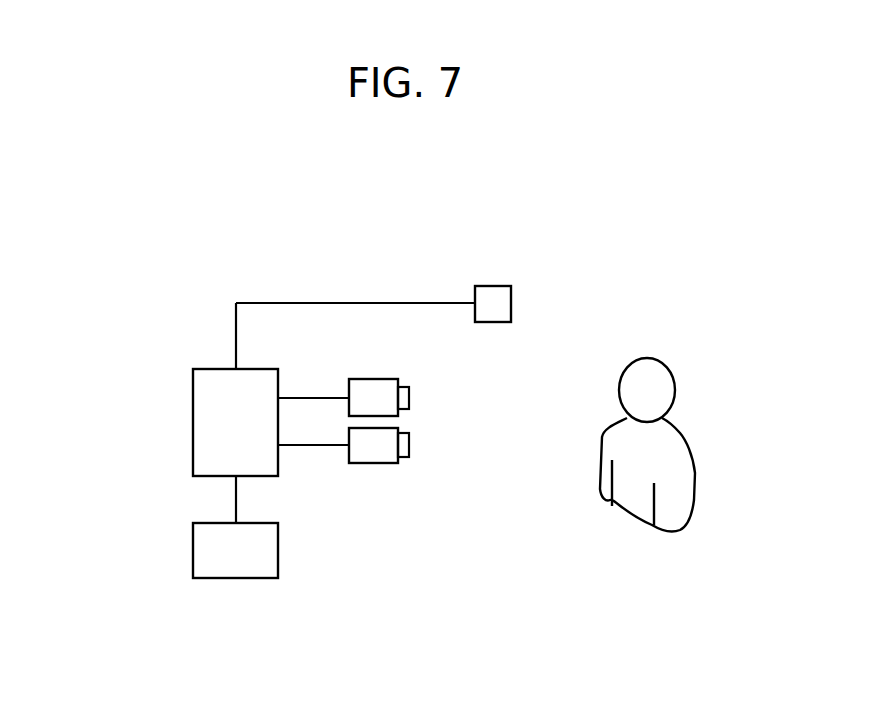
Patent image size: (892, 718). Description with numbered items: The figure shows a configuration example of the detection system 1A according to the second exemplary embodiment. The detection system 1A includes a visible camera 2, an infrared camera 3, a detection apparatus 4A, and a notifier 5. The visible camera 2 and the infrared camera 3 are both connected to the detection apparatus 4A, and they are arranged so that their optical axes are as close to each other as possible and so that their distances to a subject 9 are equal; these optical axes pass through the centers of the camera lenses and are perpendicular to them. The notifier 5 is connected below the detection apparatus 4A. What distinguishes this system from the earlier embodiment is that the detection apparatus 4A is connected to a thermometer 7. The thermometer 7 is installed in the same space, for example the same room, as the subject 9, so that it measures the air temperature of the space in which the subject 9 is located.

The detection system 1A is at (424, 288).
The visible camera 2 is at (371, 378).
The infrared camera 3 is at (374, 464).
The detection apparatus 4A is at (192, 423).
The notifier 5 is at (236, 579).
The thermometer 7 is at (495, 323).
The subject 9 is at (695, 487).